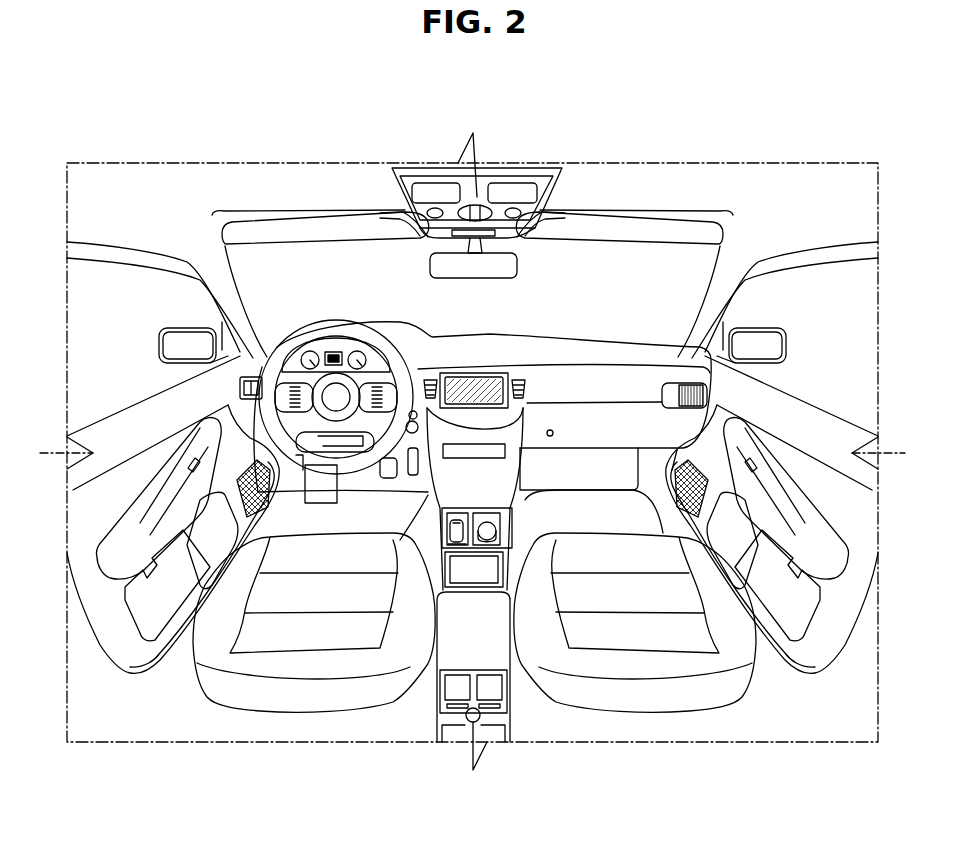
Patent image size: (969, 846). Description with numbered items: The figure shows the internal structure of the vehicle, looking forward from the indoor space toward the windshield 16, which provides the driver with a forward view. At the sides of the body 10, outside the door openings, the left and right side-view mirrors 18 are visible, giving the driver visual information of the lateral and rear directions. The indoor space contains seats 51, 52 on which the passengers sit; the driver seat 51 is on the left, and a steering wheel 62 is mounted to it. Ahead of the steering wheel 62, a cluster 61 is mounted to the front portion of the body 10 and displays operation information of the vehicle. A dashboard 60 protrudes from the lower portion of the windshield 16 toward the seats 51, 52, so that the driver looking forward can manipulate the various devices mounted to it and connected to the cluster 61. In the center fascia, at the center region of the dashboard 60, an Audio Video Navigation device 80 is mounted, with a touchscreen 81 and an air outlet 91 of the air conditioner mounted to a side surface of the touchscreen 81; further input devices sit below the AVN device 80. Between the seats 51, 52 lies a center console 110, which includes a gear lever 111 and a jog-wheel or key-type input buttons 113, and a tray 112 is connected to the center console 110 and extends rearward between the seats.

The body 10 is at (279, 139).
The windshield 16 is at (590, 252).
The side-view mirrors 18 is at (178, 340).
The driver seat 51 is at (290, 700).
The seat 52 is at (640, 700).
The dashboard 60 is at (630, 355).
The cluster 61 is at (346, 345).
The steering wheel 62 is at (330, 325).
The Audio Video Navigation (AVN) device 80 is at (500, 382).
The touchscreen 81 is at (468, 372).
The air outlet 91 is at (223, 390).
The center console 110 is at (484, 522).
The gear lever 111 is at (457, 530).
The tray 112 is at (460, 622).
The input buttons 113 is at (492, 531).